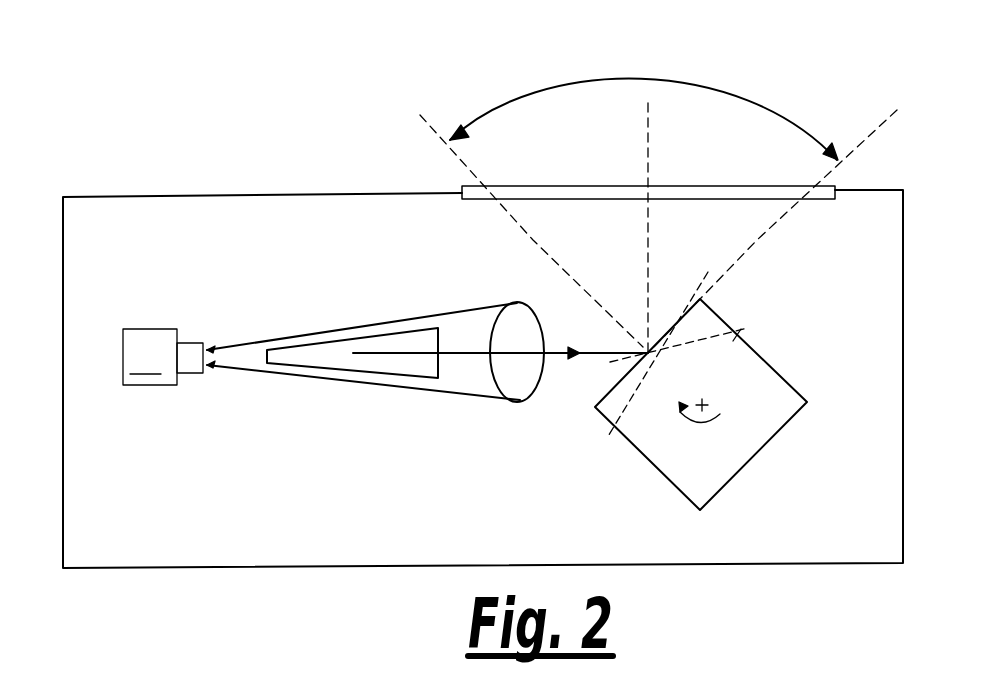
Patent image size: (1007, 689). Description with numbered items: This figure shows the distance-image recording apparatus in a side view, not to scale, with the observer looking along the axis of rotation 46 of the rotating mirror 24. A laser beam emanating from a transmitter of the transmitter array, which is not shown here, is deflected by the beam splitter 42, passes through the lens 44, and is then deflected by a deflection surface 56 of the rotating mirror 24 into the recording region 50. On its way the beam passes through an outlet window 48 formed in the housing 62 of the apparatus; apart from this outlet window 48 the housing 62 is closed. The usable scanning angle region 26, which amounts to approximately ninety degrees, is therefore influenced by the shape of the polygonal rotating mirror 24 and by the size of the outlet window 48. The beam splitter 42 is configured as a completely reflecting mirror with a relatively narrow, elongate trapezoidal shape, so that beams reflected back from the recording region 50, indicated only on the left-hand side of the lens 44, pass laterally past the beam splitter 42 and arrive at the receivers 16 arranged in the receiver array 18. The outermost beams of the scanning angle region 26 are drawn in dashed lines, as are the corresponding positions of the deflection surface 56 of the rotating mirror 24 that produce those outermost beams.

The receiver 16 is at (189, 358).
The receiver array 18 is at (150, 357).
The rotating mirror 24 is at (727, 465).
The scanning angle region 26 is at (544, 98).
The beam splitter 42 is at (326, 355).
The lens 44 is at (503, 397).
The axis of rotation 46 is at (705, 404).
The outlet window 48 is at (821, 190).
The recording region 50 is at (767, 48).
The deflection surface 56 is at (748, 328).
The housing 62 is at (903, 340).